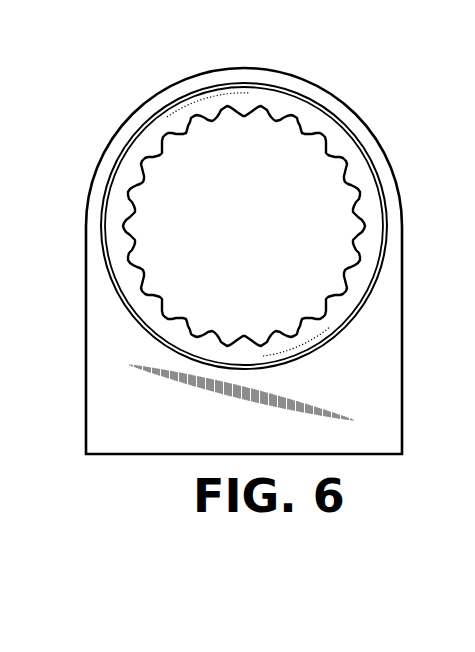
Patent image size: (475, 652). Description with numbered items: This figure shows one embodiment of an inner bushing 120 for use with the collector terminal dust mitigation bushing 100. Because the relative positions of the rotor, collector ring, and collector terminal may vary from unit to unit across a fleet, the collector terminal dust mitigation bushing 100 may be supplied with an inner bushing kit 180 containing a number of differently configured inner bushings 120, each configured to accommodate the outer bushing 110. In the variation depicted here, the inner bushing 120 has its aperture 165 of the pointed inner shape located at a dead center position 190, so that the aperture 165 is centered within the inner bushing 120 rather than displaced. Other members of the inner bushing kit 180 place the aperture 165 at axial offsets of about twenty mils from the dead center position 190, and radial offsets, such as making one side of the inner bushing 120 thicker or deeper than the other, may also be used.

The collector terminal dust mitigation bushing 100 is at (95, 155).
The inner bushing kit 180 is at (145, 55).
The outer bushing 110 is at (388, 158).
The inner bushing 120 is at (350, 127).
The aperture 165 is at (325, 220).
The dead center position 190 is at (268, 232).